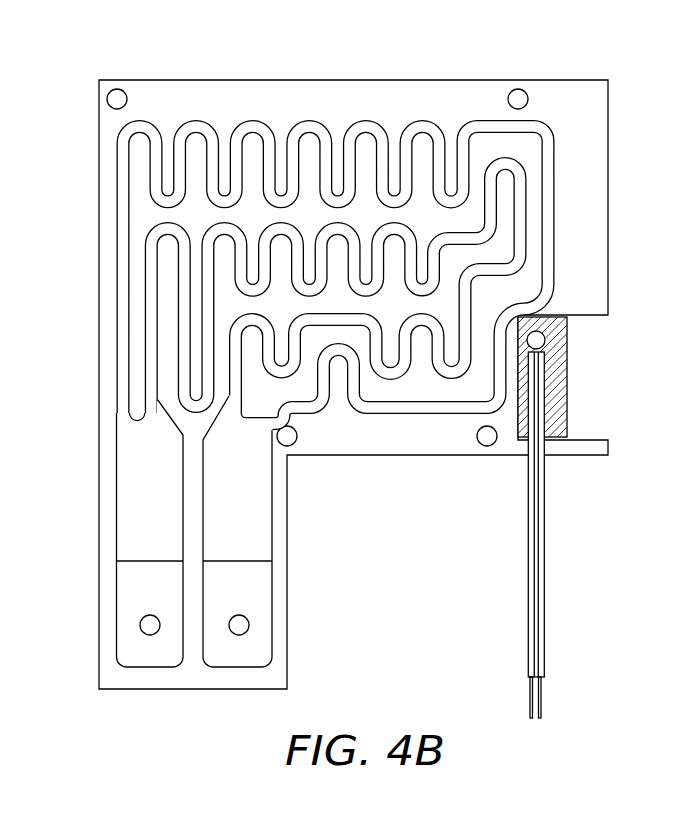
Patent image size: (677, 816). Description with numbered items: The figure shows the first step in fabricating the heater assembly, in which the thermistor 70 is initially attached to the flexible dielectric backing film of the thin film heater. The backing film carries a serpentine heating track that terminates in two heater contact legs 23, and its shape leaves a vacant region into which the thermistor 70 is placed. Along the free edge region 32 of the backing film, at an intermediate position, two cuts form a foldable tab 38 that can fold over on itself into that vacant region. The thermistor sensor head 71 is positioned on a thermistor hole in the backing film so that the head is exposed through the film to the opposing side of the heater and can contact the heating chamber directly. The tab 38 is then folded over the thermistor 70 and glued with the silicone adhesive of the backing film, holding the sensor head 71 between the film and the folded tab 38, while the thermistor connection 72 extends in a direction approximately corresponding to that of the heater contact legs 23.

The free edge region 32 is at (353, 384).
The heater contact legs 23 is at (135, 512).
The foldable tab 38 is at (625, 317).
The thermistor 70 is at (577, 523).
The thermistor sensor head 71 is at (546, 344).
The thermistor connection 72 is at (545, 652).